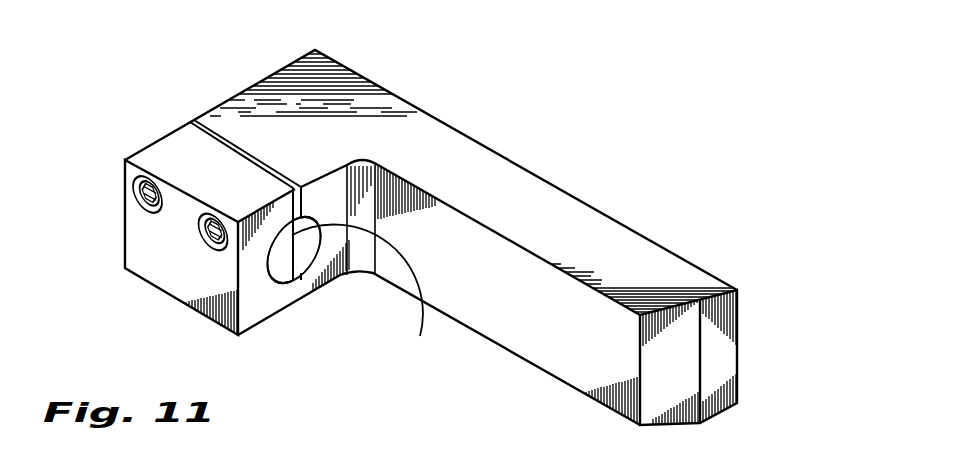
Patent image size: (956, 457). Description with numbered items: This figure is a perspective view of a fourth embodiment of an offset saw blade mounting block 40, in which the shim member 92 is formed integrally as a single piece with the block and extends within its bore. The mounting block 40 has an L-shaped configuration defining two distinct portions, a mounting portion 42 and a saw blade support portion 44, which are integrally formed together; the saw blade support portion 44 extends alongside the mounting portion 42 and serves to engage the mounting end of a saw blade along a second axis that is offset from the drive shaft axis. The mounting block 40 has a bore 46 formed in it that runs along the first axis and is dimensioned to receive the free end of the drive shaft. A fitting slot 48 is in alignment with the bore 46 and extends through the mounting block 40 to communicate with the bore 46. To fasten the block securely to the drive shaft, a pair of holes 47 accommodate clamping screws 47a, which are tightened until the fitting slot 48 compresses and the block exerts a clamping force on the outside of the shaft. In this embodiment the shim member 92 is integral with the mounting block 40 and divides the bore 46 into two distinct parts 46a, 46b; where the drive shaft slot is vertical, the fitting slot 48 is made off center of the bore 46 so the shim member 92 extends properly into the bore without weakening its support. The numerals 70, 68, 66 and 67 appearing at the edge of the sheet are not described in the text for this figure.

The mounting block 40 is at (477, 148).
The mounting portion 42 is at (173, 288).
The saw blade support portion 44 is at (560, 207).
The bore 46 is at (281, 271).
The first part of bore 46a is at (281, 271).
The second part of bore 46b is at (302, 248).
The holes 47 is at (133, 192).
The clamping screws 47a is at (203, 236).
The fitting slot 48 is at (217, 155).
The shim member 92 is at (365, 294).
The element 70 is at (386, 446).
The element 68 is at (433, 452).
The element 66 is at (485, 445).
The element 67 is at (525, 456).